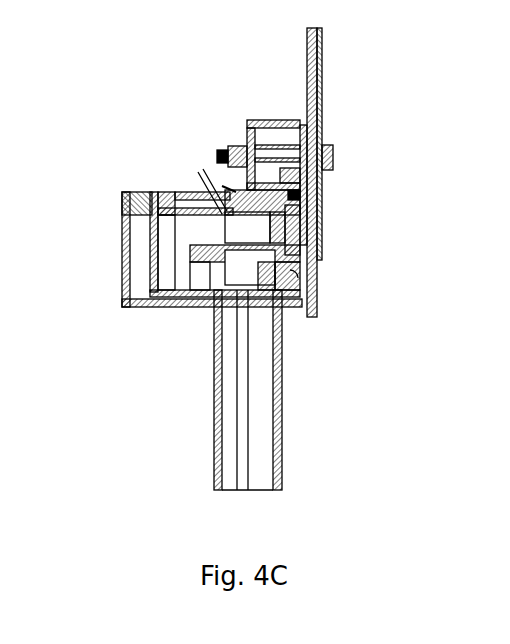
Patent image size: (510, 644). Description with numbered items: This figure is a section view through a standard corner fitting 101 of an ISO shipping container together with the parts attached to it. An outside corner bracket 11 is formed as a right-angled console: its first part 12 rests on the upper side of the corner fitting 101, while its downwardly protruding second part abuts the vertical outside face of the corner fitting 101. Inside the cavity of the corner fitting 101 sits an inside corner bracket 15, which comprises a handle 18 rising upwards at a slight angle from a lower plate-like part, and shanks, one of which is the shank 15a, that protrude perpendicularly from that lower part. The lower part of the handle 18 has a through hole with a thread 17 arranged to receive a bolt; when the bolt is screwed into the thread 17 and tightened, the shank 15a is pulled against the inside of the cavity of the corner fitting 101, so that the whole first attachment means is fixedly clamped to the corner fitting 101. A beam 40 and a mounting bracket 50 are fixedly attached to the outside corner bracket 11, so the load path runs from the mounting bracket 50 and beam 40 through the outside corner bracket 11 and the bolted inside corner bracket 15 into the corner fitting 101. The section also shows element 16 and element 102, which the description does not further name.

The outside corner bracket 11 is at (250, 120).
The first part 12 is at (236, 190).
The inside corner bracket 15 is at (210, 233).
The shank 15a is at (283, 270).
The valve element 16 is at (257, 265).
The thread 17 is at (208, 263).
The handle 18 is at (198, 181).
The beam 40 is at (310, 128).
The mounting bracket 50 is at (313, 74).
The corner fitting 101 is at (126, 215).
The pipe 102 is at (265, 458).